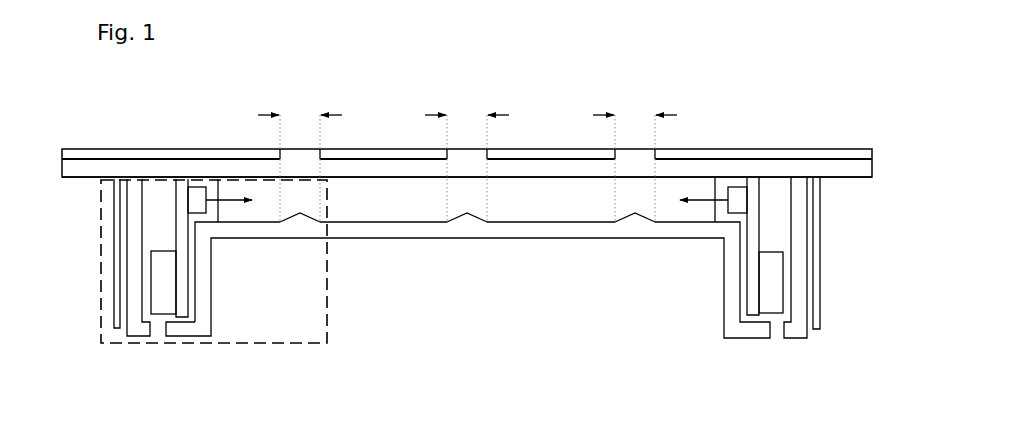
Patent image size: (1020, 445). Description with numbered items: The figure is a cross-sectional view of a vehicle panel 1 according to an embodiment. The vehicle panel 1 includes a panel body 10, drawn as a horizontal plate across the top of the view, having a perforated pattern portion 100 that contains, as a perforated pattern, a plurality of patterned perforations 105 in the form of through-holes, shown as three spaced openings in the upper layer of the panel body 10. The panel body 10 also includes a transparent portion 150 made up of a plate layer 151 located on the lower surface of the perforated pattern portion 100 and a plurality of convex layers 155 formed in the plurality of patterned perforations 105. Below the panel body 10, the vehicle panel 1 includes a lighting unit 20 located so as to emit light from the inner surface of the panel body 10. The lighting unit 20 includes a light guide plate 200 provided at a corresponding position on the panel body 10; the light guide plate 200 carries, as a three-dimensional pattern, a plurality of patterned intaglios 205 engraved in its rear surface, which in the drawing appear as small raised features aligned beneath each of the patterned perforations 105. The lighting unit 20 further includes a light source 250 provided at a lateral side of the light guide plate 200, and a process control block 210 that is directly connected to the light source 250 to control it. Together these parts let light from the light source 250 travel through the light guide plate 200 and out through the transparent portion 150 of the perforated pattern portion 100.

The vehicle panel 1 is at (97, 119).
The panel body 10 is at (60, 150).
The perforated pattern portion 100 is at (836, 147).
The patterned perforations 105 is at (467, 103).
The transparent portion 150 is at (833, 183).
The plate layer 151 is at (853, 170).
The convex layers 155 is at (289, 155).
The lighting unit 20 is at (240, 346).
The light guide plate 200 is at (373, 214).
The patterned intaglios 205 is at (296, 223).
The process control block 210 is at (177, 240).
The light source 250 is at (185, 200).